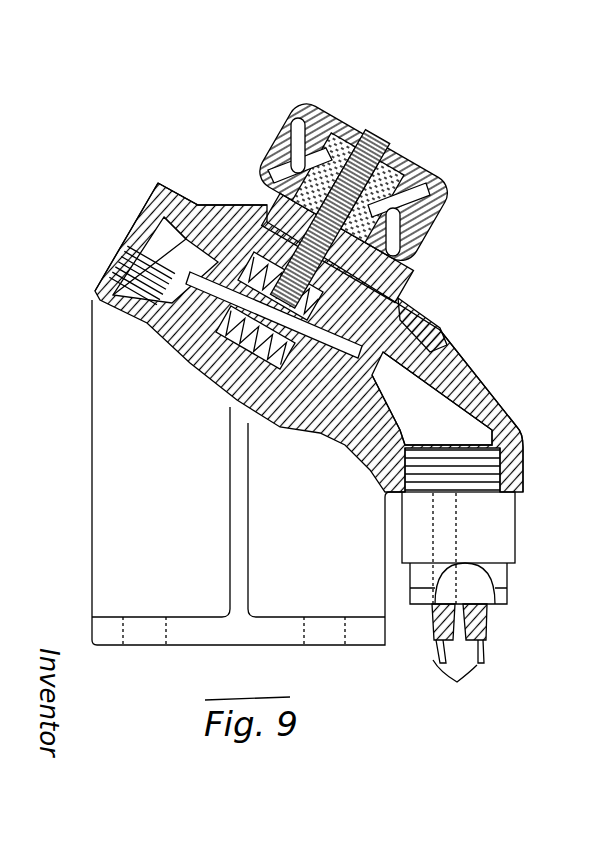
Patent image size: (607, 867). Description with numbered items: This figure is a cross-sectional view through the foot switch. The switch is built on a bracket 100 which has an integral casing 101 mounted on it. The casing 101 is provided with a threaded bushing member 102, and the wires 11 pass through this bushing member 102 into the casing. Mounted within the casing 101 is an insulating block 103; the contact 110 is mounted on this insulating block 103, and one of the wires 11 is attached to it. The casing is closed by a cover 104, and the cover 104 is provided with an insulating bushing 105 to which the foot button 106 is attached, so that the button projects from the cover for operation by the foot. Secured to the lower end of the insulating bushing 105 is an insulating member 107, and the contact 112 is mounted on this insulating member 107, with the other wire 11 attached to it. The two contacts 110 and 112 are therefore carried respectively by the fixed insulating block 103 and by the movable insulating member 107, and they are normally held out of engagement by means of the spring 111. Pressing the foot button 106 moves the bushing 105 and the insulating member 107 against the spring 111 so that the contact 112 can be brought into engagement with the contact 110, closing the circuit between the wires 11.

The bracket 100 is at (222, 472).
The casing 101 is at (140, 245).
The threaded bushing member 102 is at (497, 532).
The insulating block 103 is at (385, 398).
The cover 104 is at (400, 298).
The insulating bushing 105 is at (392, 258).
The foot button 106 is at (450, 205).
The insulating member 107 is at (430, 324).
The contact 110 is at (318, 432).
The spring 111 is at (205, 390).
The contact 112 is at (354, 366).
The wires 11 is at (459, 658).